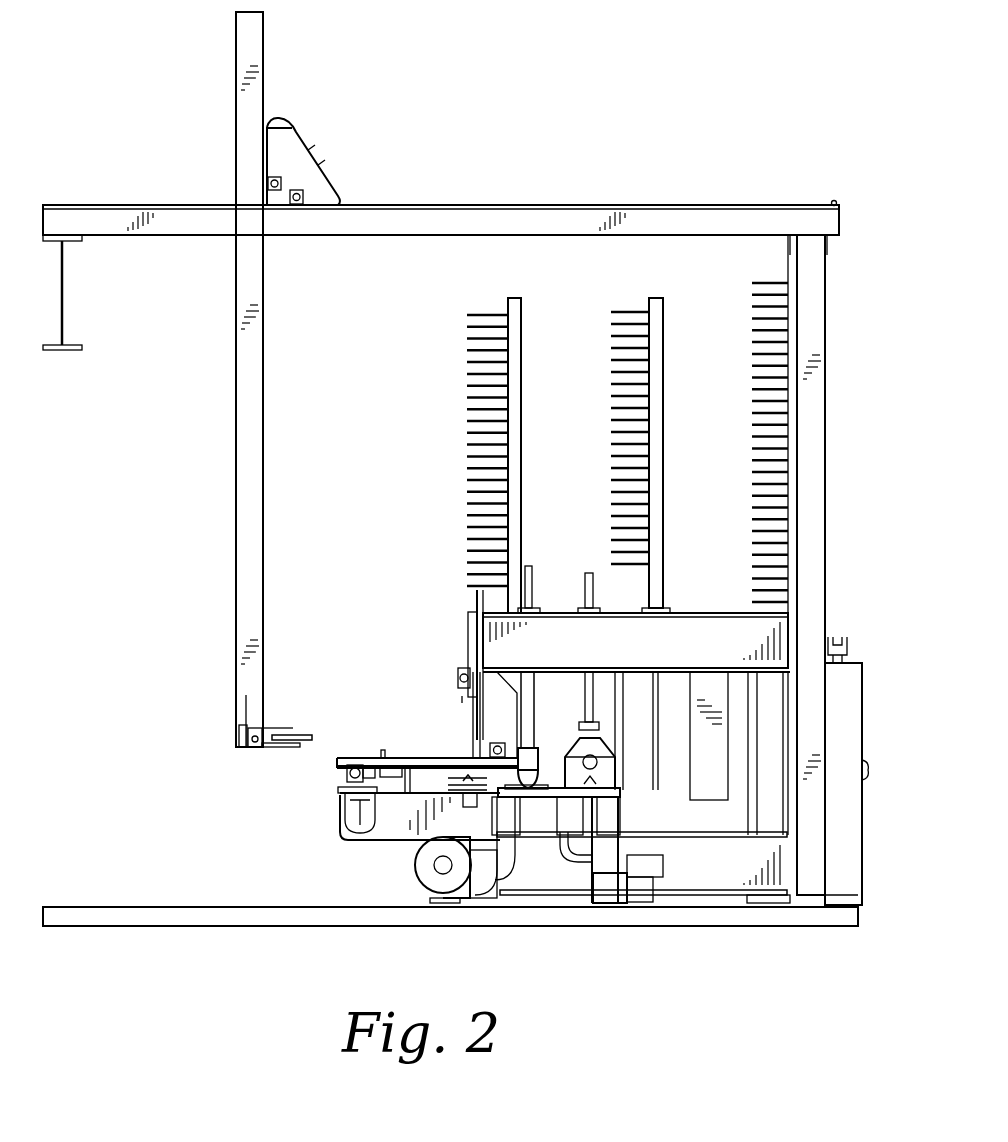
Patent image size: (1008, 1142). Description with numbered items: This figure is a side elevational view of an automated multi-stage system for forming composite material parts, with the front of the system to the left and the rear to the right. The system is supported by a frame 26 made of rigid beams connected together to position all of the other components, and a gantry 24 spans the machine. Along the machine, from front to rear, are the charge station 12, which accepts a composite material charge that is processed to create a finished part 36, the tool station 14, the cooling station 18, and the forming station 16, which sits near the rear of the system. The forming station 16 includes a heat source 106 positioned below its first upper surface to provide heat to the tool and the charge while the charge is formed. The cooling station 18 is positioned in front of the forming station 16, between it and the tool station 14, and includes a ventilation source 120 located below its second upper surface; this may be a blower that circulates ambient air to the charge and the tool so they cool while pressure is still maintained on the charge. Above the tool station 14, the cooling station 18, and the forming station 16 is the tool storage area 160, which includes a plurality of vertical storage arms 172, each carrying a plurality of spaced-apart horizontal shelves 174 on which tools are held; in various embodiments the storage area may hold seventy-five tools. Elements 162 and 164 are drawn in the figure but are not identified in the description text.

The charge station 12 is at (325, 800).
The tool station 14 is at (457, 768).
The forming station 16 is at (635, 740).
The cooling station 18 is at (545, 740).
The gantry 24 is at (368, 108).
The frame 26 is at (800, 162).
The finished part 36 is at (297, 737).
The heat source 106 is at (630, 913).
The ventilation source 120 is at (458, 913).
The tool storage area 160 is at (637, 283).
The beam 162 is at (193, 212).
The column 164 is at (240, 272).
The vertical storage arm 172 is at (519, 298).
The horizontal shelves 174 is at (466, 304).